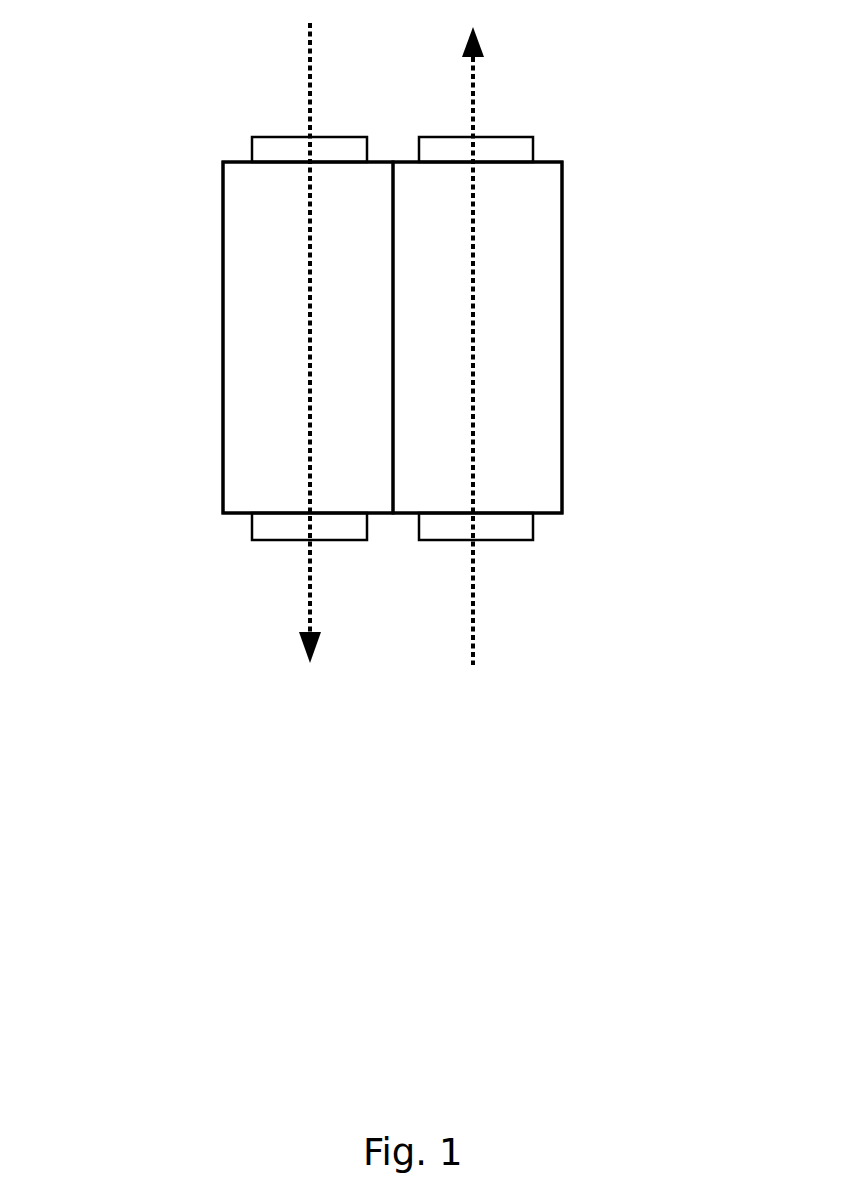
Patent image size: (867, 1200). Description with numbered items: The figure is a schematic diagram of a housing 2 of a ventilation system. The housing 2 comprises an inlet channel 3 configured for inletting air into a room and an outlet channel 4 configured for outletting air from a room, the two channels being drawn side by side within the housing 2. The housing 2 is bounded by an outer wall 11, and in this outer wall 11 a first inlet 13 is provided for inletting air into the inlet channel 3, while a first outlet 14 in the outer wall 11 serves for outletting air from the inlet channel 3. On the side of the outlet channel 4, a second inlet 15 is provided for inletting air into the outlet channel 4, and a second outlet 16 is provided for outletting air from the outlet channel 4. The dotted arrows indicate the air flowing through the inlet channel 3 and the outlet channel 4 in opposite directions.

The housing 2 is at (411, 338).
The inlet channel 3 is at (243, 312).
The outlet channel 4 is at (542, 320).
The outer wall 11 is at (550, 161).
The first inlet 13 is at (292, 148).
The first outlet 14 is at (282, 520).
The second inlet 15 is at (498, 153).
The second outlet 16 is at (508, 530).